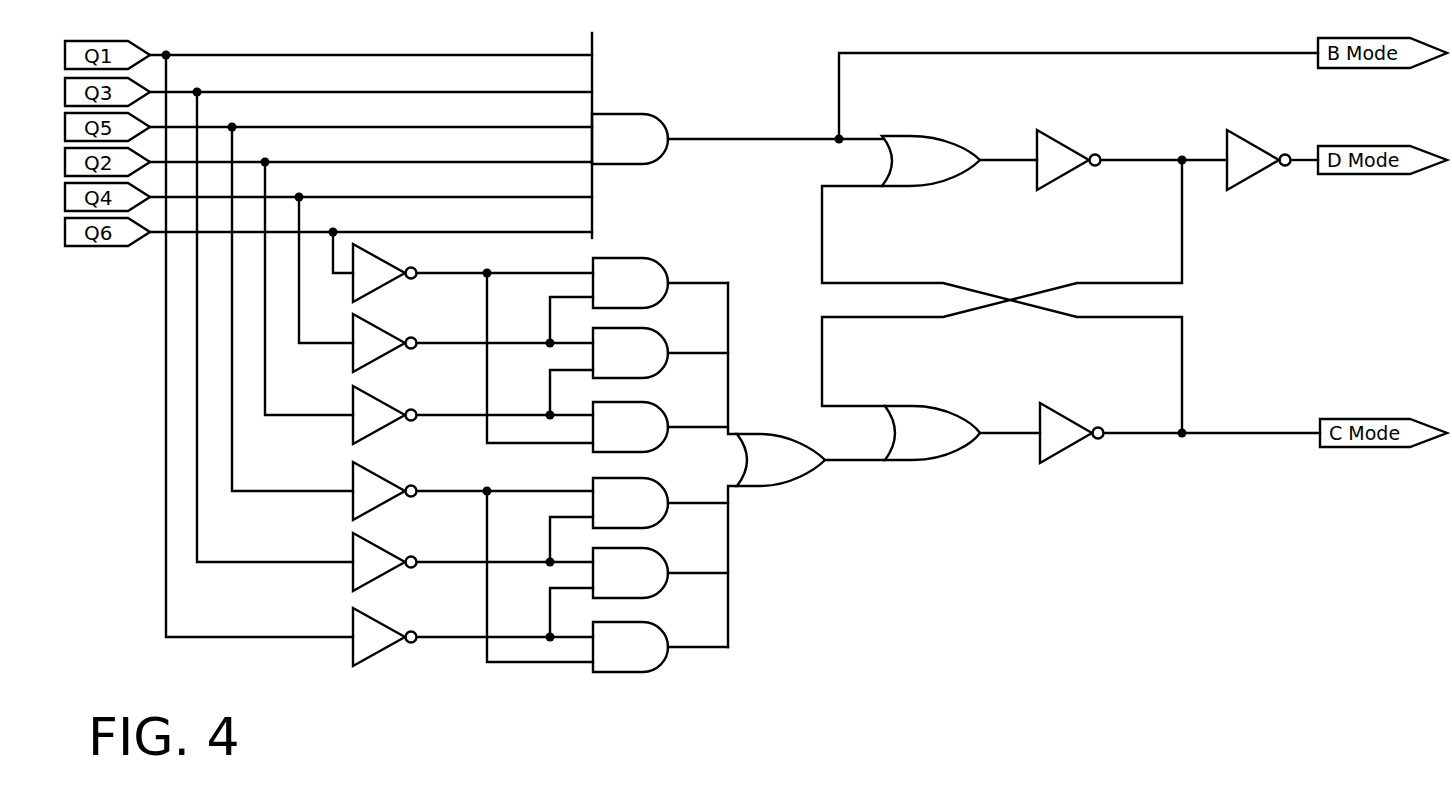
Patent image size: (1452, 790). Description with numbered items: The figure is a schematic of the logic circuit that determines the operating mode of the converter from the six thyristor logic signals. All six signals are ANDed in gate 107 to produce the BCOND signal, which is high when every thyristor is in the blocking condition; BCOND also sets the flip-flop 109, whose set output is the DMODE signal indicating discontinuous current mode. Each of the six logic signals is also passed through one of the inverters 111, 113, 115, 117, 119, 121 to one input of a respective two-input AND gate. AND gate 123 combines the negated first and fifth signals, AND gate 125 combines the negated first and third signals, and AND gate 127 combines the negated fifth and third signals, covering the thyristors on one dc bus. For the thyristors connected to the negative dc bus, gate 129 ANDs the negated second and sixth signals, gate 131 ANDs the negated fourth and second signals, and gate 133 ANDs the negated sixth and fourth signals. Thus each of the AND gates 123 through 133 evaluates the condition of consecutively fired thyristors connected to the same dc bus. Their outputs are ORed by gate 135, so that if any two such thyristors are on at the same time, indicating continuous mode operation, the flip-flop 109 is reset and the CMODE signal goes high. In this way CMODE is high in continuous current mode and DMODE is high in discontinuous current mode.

The AND gate 107 is at (645, 122).
The flip-flop 109 is at (1208, 251).
The inverter 111 is at (386, 632).
The inverter 113 is at (386, 557).
The inverter 115 is at (386, 486).
The inverter 117 is at (386, 410).
The inverter 119 is at (386, 338).
The inverter 121 is at (386, 268).
The AND gate 123 is at (652, 627).
The AND gate 125 is at (652, 553).
The AND gate 127 is at (652, 483).
The AND gate 129 is at (652, 407).
The AND gate 131 is at (652, 333).
The AND gate 133 is at (652, 263).
The OR gate 135 is at (768, 485).